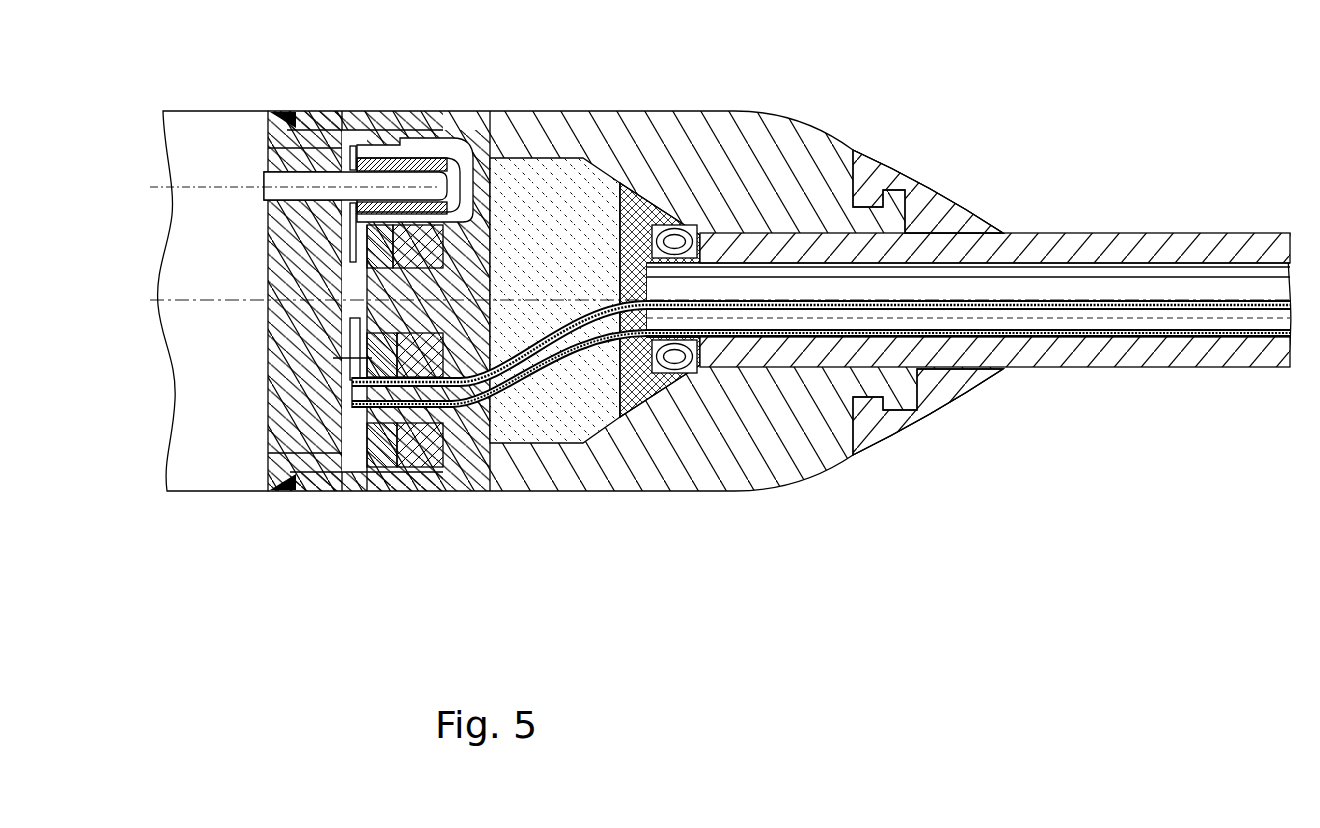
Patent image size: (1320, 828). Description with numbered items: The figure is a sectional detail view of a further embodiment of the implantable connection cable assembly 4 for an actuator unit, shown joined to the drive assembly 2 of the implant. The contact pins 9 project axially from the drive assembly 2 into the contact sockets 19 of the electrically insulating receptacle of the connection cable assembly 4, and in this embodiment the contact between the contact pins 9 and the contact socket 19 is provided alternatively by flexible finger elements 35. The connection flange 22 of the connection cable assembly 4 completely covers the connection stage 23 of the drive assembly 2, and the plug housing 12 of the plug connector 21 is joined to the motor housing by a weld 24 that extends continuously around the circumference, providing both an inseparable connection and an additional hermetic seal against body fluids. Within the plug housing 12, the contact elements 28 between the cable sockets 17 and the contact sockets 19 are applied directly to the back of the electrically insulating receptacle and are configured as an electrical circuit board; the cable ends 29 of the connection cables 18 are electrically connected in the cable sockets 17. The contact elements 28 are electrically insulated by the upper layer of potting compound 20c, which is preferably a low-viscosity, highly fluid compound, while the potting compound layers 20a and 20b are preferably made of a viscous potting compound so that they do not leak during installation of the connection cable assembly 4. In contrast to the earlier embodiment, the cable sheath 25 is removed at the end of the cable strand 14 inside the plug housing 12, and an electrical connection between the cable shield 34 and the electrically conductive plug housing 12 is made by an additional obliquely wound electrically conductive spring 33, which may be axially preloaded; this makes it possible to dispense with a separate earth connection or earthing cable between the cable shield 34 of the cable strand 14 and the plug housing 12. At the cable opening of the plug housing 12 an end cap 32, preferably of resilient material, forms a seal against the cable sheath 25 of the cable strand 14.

The drive assembly 2 is at (188, 208).
The connection cable assembly 4 is at (1072, 218).
The contact pins 9 is at (385, 118).
The plug housing 12 is at (640, 140).
The cable strand 14 is at (1186, 255).
The cable sockets 17 is at (355, 383).
The connection cables 18 is at (574, 362).
The contact sockets 19 is at (470, 118).
The potting compound layer 20a is at (642, 385).
The potting compound layer 20b is at (546, 447).
The potting compound layer 20c is at (476, 452).
The plug connector 21 is at (795, 106).
The connection flange 22 is at (345, 118).
The connection stage 23 is at (313, 118).
The weld 24 is at (290, 114).
The cable sheath 25 is at (1240, 250).
The contact elements 28 is at (386, 470).
The cable ends 29 is at (440, 490).
The end cap 32 is at (940, 395).
The obliquely wound electrically conductive spring 33 is at (682, 226).
The cable shield 34 is at (1010, 233).
The flexible finger elements 35 is at (428, 122).